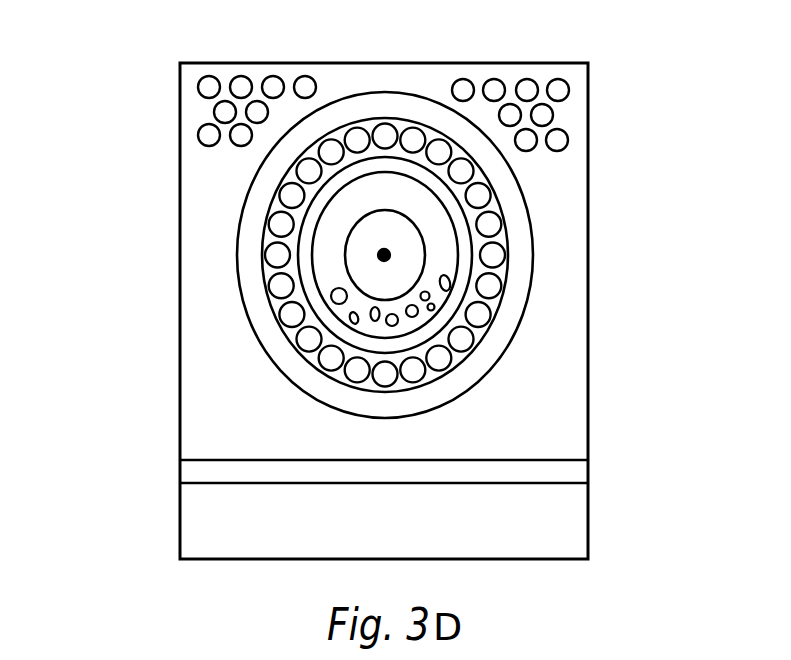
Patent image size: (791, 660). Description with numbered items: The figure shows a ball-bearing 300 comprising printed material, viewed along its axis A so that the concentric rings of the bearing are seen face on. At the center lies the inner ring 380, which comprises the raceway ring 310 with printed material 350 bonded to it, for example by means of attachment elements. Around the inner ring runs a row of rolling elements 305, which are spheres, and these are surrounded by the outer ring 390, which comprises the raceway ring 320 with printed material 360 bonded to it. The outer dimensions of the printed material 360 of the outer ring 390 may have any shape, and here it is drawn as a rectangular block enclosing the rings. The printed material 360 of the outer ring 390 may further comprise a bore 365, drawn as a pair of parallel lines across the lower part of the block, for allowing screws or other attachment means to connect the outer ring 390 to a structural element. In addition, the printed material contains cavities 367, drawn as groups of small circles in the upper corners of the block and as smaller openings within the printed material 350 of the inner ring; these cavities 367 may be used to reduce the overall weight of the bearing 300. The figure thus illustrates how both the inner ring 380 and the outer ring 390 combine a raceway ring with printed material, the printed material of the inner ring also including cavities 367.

The bearing 300 is at (136, 80).
The rolling elements 305 is at (490, 285).
The raceway ring 310 is at (313, 207).
The raceway ring 320 is at (518, 203).
The printed material 350 is at (328, 250).
The printed material 360 is at (553, 246).
The bore 365 is at (573, 471).
The cavities 367 is at (557, 140).
The inner ring 380 is at (244, 255).
The outer ring 390 is at (504, 255).
The axis of rotation A is at (382, 256).